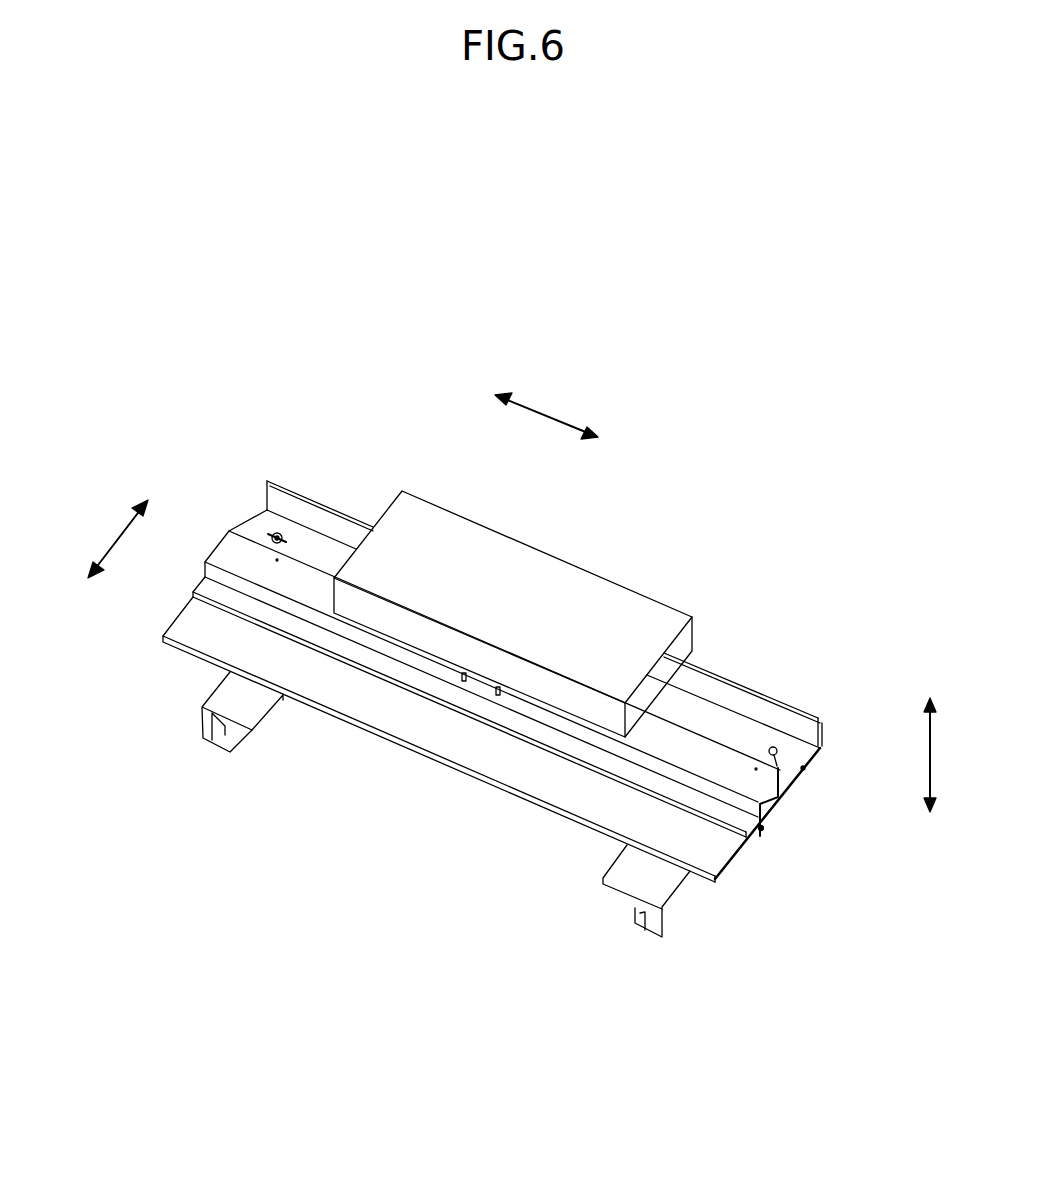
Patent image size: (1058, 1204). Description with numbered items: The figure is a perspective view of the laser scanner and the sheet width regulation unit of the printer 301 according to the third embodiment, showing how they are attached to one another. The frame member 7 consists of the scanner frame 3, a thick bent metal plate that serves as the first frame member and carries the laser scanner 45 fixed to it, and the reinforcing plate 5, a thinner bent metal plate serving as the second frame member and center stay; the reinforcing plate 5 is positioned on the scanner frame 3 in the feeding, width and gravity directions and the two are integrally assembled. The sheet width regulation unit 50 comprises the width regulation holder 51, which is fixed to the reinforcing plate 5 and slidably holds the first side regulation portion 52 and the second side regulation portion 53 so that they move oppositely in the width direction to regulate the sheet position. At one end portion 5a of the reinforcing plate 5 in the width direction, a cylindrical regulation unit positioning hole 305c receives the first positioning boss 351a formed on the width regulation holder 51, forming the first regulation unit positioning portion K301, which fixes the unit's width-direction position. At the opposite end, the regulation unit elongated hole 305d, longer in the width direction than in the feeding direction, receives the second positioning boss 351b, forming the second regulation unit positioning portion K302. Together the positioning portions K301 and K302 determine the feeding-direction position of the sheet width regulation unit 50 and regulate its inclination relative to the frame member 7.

The printer 301 is at (664, 328).
The regulation unit elongated hole 305d is at (276, 532).
The second positioning boss 351b is at (289, 541).
The laser scanner 45 is at (578, 603).
The scanner frame 3 is at (671, 731).
The reinforcing plate 5 is at (786, 721).
The frame member 7 is at (549, 664).
The end portion of guide plate 5a is at (802, 749).
The sheet width regulation unit 50 is at (169, 664).
The width regulation holder 51 is at (759, 838).
The first side regulation portion 52 is at (202, 722).
The second side regulation portion 53 is at (673, 908).
The second regulation unit positioning portion K302 is at (275, 556).
The first regulation unit positioning portion K301 is at (758, 767).
The regulation unit positioning hole 305c is at (780, 760).
The first positioning boss 351a is at (779, 796).